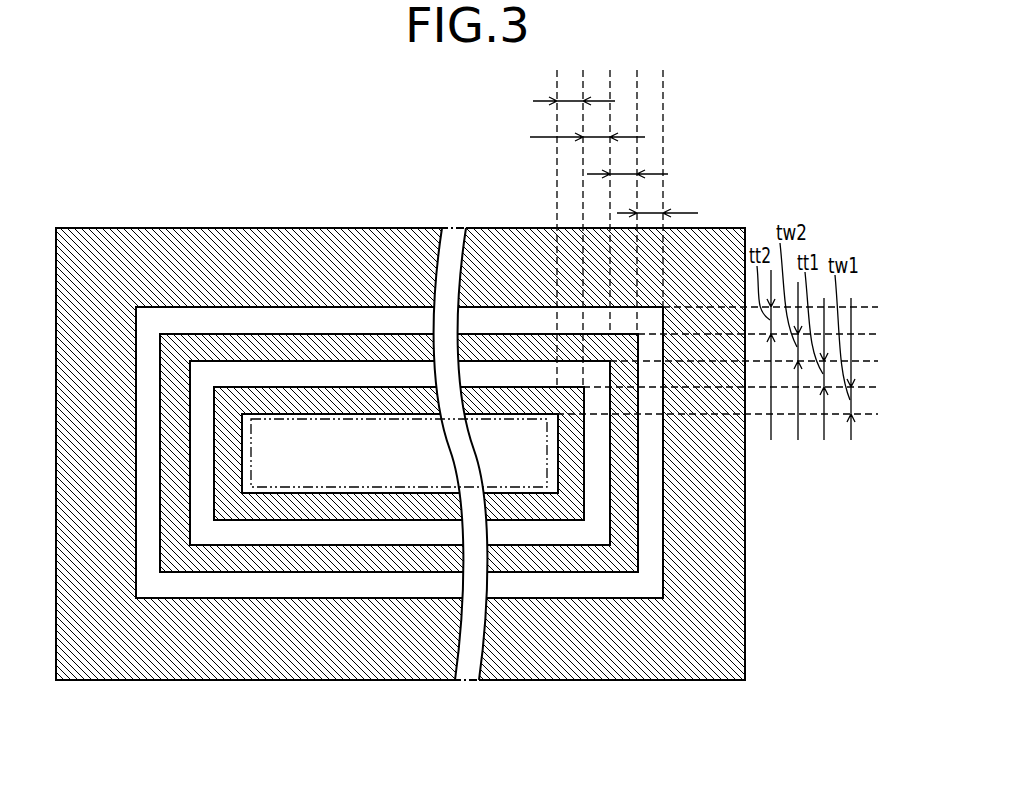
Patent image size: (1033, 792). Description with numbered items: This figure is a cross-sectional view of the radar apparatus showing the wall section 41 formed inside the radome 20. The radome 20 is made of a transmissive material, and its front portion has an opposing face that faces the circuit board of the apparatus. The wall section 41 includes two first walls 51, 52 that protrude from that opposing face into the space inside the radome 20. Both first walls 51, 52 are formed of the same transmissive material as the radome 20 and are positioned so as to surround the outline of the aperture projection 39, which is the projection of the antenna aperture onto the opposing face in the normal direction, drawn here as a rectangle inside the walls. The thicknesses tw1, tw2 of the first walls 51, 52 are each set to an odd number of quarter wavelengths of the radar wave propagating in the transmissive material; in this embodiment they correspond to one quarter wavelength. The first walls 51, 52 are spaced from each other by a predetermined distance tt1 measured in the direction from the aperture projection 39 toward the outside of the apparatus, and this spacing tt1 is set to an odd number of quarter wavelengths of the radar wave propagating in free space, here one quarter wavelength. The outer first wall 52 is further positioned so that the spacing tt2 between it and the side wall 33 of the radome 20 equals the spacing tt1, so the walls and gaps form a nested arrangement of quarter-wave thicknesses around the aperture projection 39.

The radome 20 is at (400, 468).
The side wall 33 is at (114, 660).
The aperture projection 39 is at (383, 443).
The wall section 41 is at (399, 546).
The first wall 51 is at (238, 508).
The first wall 52 is at (192, 559).
The thickness of first wall tw1 is at (563, 101).
The spacing between first walls tt1 is at (590, 137).
The thickness of first wall tw2 is at (617, 174).
The spacing between first wall and side wall tt2 is at (645, 213).